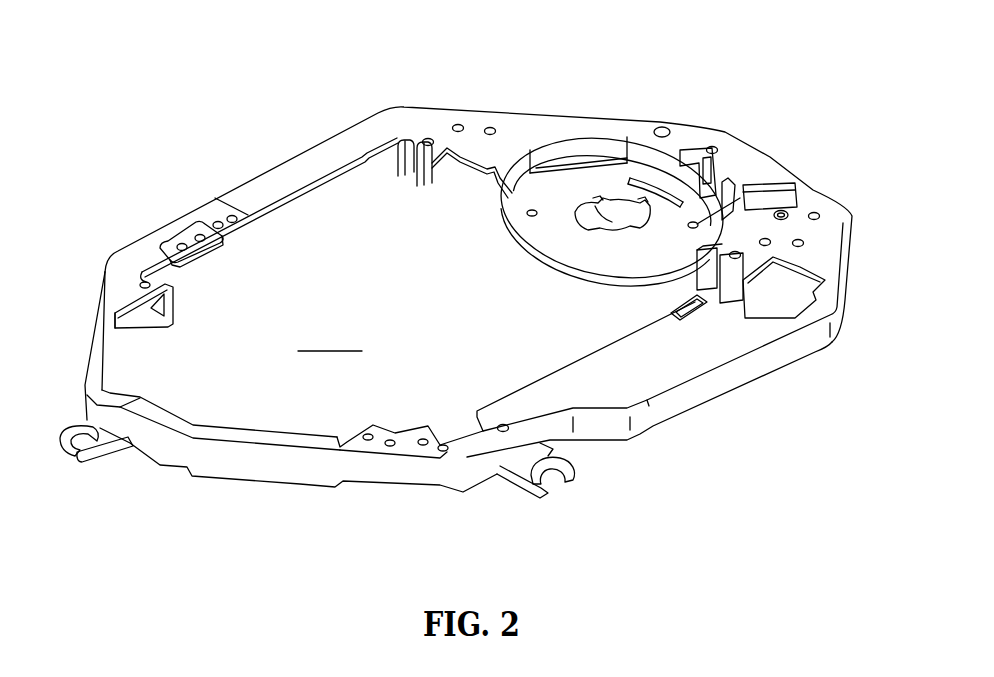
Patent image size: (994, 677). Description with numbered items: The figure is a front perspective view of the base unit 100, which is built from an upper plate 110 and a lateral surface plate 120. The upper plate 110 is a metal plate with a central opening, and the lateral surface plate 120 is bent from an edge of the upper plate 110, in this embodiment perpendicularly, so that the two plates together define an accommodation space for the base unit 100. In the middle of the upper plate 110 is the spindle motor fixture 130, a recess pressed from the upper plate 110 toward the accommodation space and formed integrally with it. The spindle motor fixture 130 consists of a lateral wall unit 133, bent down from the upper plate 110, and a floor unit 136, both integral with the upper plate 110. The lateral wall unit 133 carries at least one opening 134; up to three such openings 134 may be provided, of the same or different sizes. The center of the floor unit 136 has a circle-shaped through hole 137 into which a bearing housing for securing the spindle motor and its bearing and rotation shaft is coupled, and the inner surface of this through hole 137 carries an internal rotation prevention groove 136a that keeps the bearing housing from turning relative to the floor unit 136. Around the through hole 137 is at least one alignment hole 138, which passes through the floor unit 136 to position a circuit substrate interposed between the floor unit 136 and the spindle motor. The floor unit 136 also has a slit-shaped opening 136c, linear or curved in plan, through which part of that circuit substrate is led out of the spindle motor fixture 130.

The base unit 100 is at (722, 130).
The upper plate 110 is at (262, 187).
The lateral surface plate 120 is at (712, 377).
The spindle motor fixture 130 is at (588, 258).
The lateral wall unit 133 is at (648, 156).
The opening 134 is at (703, 168).
The floor unit 136 is at (577, 185).
The internal rotation prevention groove 136a is at (599, 205).
The slit-shaped opening 136c is at (662, 187).
The through hole 137 is at (590, 205).
The alignment hole 138 is at (760, 200).